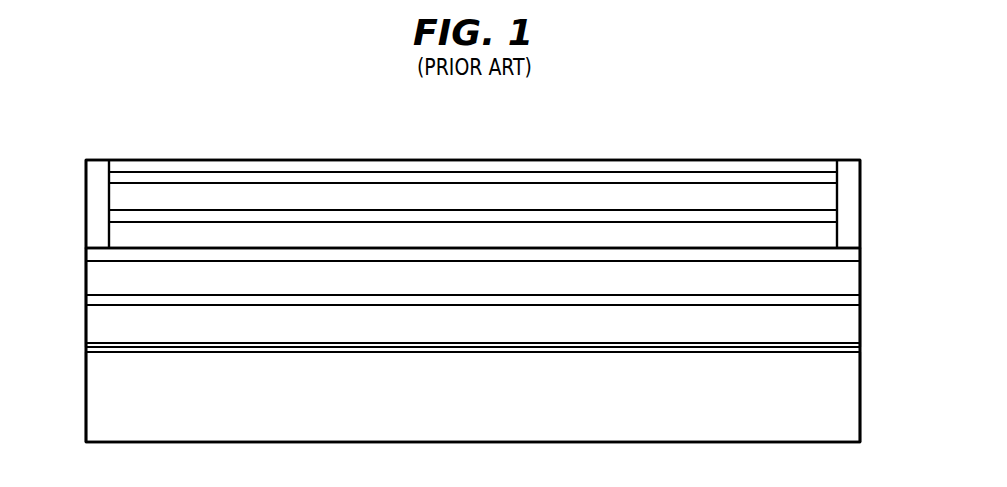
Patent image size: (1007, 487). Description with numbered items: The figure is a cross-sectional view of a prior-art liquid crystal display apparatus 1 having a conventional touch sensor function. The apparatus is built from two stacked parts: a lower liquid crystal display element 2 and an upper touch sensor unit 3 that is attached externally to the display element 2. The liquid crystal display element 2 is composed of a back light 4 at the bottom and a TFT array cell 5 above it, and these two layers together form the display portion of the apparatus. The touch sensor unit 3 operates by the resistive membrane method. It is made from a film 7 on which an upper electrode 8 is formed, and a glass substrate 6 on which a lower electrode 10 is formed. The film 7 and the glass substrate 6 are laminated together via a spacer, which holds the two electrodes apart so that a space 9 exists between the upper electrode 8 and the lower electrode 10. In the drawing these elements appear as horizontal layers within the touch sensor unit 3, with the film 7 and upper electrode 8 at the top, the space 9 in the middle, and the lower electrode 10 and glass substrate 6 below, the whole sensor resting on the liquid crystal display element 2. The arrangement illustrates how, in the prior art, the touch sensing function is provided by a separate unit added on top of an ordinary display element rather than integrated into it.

The liquid crystal display apparatus 1 is at (641, 124).
The liquid crystal display element 2 is at (476, 345).
The touch sensor unit 3 is at (495, 180).
The back light 4 is at (868, 347).
The TFT array cell 5 is at (868, 250).
The glass substrate 6 is at (453, 237).
The film 7 is at (267, 163).
The upper electrode 8 is at (310, 178).
The space 9 is at (355, 195).
The lower electrode 10 is at (392, 218).